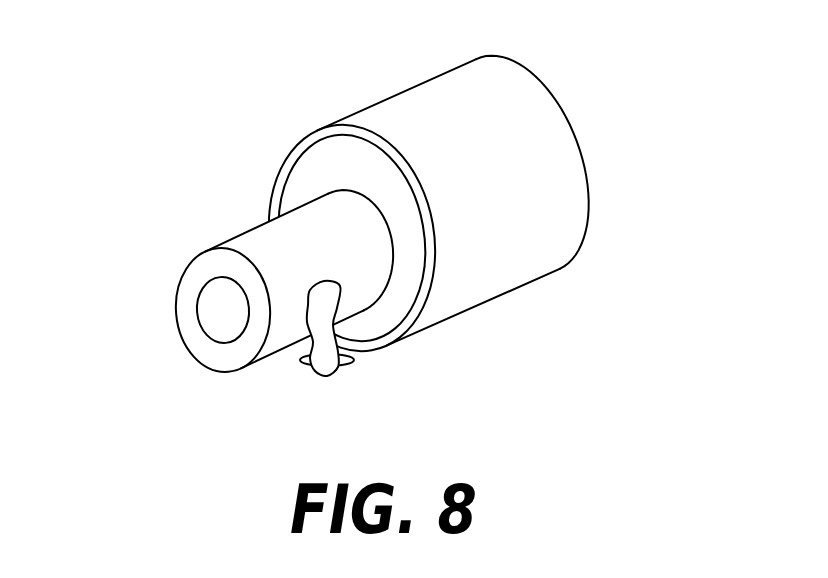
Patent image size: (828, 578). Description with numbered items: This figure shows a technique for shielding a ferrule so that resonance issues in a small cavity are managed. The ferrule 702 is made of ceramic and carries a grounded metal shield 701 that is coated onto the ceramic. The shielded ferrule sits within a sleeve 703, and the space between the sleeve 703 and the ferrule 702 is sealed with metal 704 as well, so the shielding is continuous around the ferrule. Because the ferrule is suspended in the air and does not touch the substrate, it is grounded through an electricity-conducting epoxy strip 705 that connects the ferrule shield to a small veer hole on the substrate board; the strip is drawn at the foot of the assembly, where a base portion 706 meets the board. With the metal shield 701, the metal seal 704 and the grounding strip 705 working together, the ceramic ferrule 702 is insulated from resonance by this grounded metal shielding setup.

The metal shield 701 is at (275, 217).
The ferrule 702 is at (232, 308).
The sleeve 703 is at (498, 152).
The metal 704 is at (400, 222).
The electricity-conducting epoxy strip 705 is at (328, 325).
The base 706 is at (352, 375).